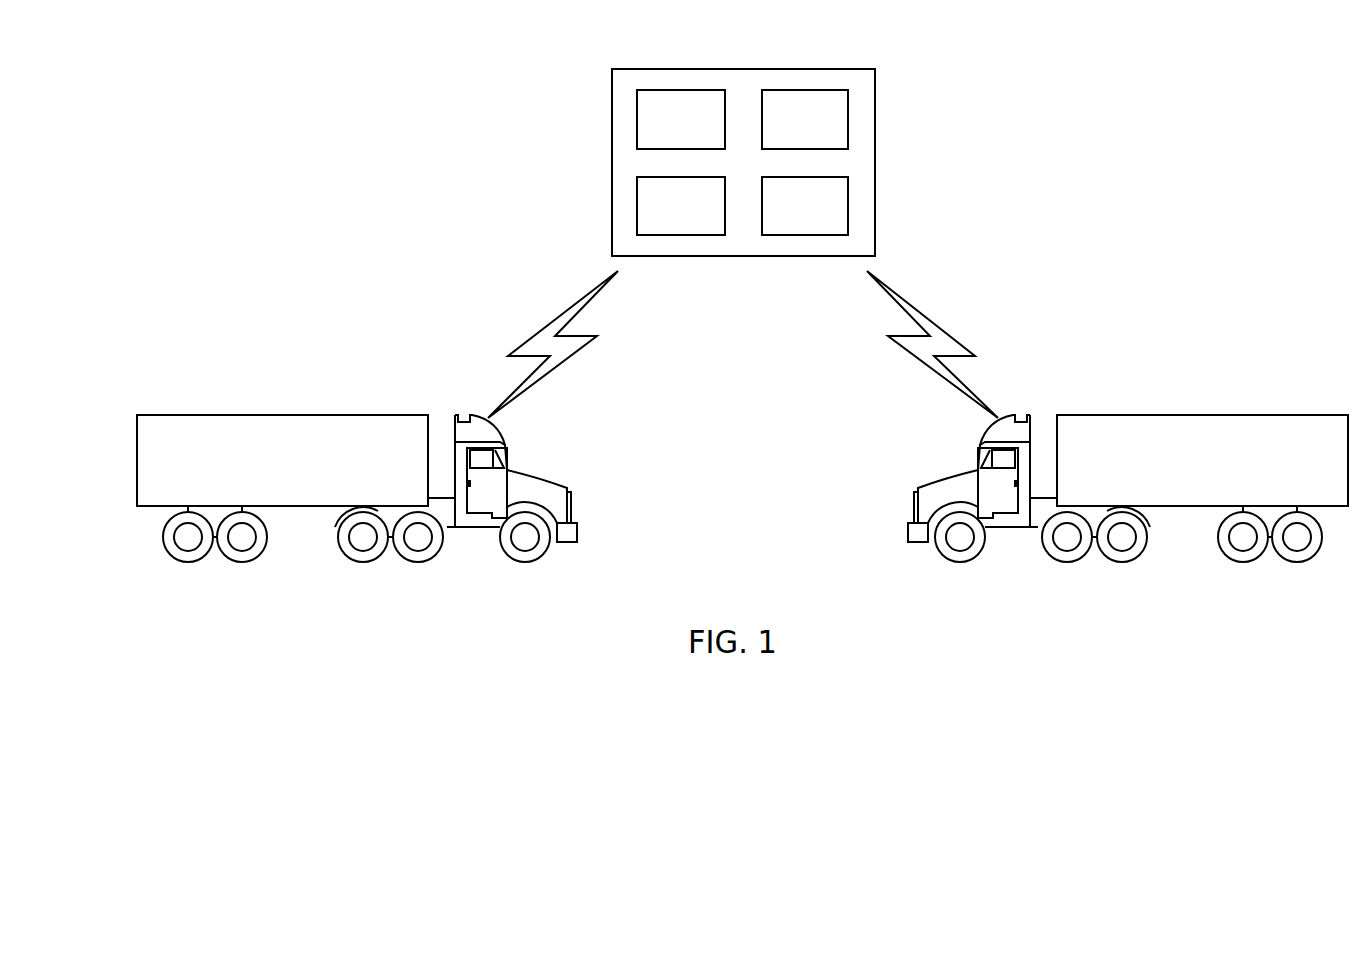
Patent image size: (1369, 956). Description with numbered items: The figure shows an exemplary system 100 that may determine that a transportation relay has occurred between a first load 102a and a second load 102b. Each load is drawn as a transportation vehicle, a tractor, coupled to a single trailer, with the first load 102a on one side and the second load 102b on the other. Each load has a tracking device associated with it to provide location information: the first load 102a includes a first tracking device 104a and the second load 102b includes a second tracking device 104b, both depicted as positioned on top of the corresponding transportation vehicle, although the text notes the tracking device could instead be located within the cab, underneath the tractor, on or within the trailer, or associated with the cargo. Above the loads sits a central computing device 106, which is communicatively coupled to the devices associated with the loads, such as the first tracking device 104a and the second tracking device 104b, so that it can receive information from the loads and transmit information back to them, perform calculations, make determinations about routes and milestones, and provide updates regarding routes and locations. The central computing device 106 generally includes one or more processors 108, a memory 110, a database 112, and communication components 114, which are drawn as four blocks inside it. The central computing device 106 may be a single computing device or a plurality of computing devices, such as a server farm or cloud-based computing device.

The system 100 is at (1103, 165).
The first load 102a is at (282, 563).
The second load 102b is at (1203, 563).
The first tracking device 104a is at (463, 415).
The second tracking device 104b is at (1022, 415).
The central computing device 106 is at (650, 69).
The processors 108 is at (805, 119).
The memory 110 is at (681, 119).
The database 112 is at (805, 206).
The communication components 114 is at (681, 206).